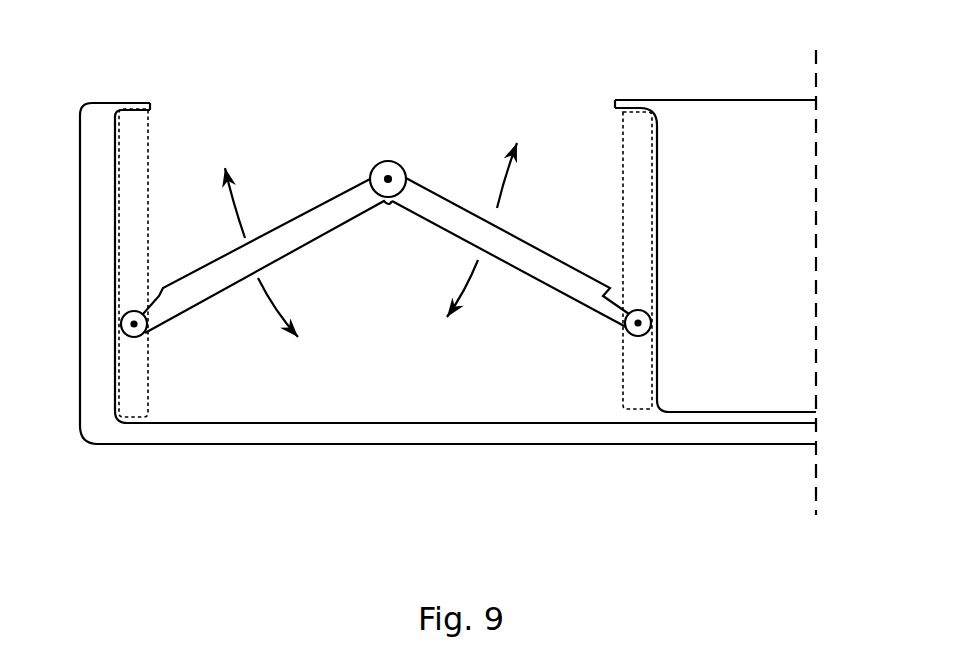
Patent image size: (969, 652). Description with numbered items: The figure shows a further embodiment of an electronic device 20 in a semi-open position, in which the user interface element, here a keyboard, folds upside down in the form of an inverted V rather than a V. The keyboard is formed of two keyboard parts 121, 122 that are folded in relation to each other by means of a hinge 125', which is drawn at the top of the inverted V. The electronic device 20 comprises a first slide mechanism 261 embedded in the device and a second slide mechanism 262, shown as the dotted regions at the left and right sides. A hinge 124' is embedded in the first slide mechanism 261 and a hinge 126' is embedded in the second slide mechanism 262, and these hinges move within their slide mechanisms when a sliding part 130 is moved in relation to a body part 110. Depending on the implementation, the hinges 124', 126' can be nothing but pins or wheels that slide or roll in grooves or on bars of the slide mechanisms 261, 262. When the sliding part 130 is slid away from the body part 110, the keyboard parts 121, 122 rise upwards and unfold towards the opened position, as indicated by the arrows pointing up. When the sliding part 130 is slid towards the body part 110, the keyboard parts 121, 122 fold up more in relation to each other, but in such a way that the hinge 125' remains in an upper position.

The electronic device 20 is at (61, 49).
The body part 110 is at (800, 212).
The keyboard part 121 is at (283, 221).
The keyboard part 122 is at (528, 242).
The hinge 124' is at (202, 366).
The hinge 125' is at (414, 138).
The hinge 126' is at (595, 358).
The sliding part 130 is at (112, 445).
The first slide mechanism 261 is at (148, 153).
The second slide mechanism 262 is at (623, 148).